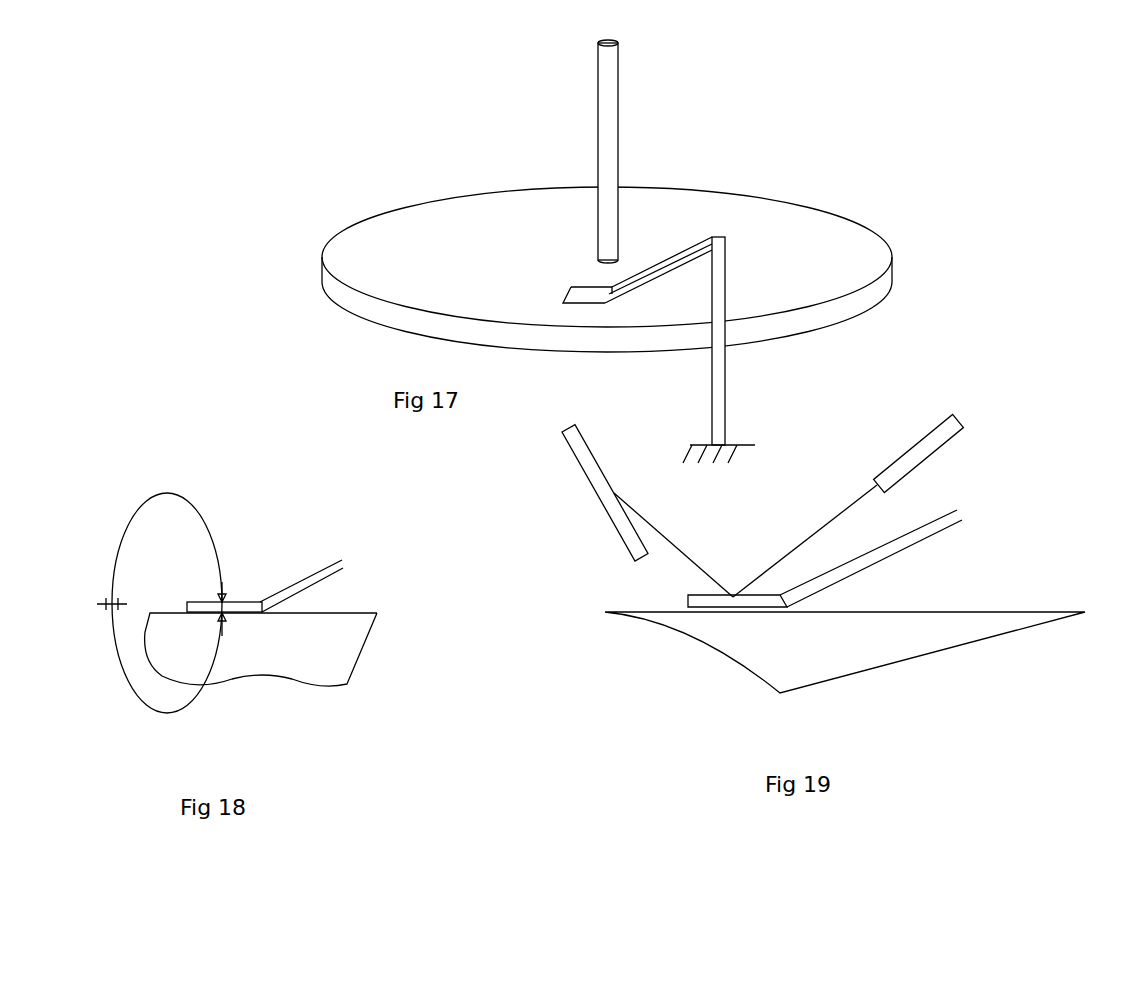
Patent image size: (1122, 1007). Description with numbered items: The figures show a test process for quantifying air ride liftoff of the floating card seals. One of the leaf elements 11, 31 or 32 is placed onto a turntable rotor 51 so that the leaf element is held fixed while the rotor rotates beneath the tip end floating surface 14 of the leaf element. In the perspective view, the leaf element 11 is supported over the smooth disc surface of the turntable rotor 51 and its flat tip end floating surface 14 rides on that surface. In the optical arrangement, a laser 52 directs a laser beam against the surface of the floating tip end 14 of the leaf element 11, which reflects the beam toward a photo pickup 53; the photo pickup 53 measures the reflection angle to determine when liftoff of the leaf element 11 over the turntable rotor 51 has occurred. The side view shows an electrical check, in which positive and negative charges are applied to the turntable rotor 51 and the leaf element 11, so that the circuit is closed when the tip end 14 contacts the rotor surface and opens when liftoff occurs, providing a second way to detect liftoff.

In FIG. 17, the leaf element 11 is at (678, 266).
In FIG. 18, the leaf element 11 is at (316, 562).
In FIG. 19, the leaf element 11 is at (895, 548).
In FIG. 18, the tip end floating surface 14 is at (198, 602).
In FIG. 19, the tip end floating surface 14 is at (715, 600).
In FIG. 18, the leaf element 31 is at (301, 586).
In FIG. 17, the leaf element 32 is at (653, 268).
In FIG. 18, the leaf element 32 is at (300, 580).
In FIG. 17, the turntable rotor 51 is at (808, 247).
In FIG. 18, the turntable rotor 51 is at (323, 653).
In FIG. 19, the turntable rotor 51 is at (908, 637).
In FIG. 19, the laser 52 is at (935, 437).
In FIG. 19, the photo pickup 53 is at (587, 465).